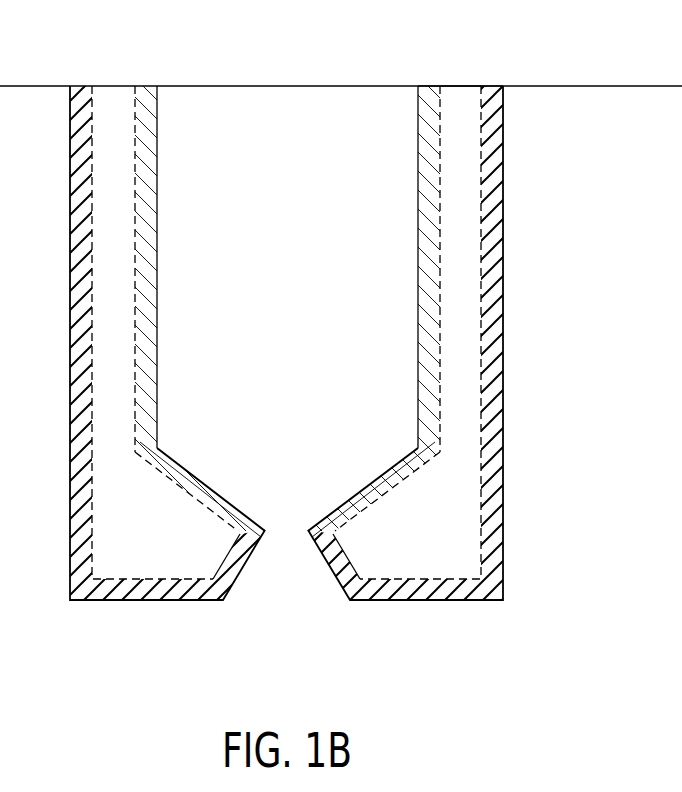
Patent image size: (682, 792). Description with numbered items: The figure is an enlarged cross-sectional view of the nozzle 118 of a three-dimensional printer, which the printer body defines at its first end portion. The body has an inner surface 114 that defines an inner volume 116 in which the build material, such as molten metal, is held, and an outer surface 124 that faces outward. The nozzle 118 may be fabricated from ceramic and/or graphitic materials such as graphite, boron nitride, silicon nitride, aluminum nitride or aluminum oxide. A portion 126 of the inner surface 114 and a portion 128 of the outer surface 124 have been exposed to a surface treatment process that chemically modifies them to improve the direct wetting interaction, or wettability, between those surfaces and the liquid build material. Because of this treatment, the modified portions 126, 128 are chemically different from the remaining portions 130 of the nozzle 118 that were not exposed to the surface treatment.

The inner surface 114 is at (418, 193).
The inner volume 116 is at (302, 324).
The nozzle 118 is at (557, 377).
The outer surface 124 is at (503, 194).
The portion of the inner surface 126 is at (424, 86).
The portion of the outer surface 128 is at (493, 86).
The remaining portions of the nozzle 130 is at (462, 88).